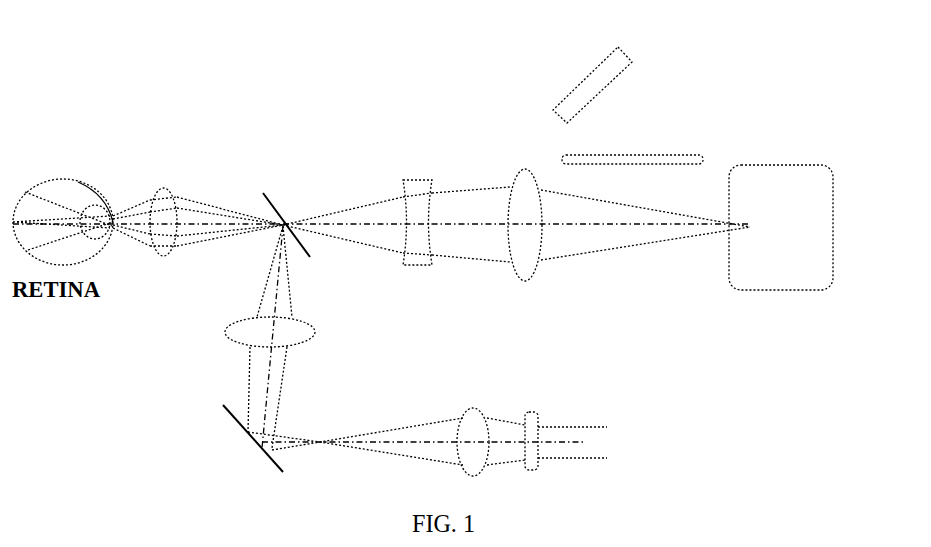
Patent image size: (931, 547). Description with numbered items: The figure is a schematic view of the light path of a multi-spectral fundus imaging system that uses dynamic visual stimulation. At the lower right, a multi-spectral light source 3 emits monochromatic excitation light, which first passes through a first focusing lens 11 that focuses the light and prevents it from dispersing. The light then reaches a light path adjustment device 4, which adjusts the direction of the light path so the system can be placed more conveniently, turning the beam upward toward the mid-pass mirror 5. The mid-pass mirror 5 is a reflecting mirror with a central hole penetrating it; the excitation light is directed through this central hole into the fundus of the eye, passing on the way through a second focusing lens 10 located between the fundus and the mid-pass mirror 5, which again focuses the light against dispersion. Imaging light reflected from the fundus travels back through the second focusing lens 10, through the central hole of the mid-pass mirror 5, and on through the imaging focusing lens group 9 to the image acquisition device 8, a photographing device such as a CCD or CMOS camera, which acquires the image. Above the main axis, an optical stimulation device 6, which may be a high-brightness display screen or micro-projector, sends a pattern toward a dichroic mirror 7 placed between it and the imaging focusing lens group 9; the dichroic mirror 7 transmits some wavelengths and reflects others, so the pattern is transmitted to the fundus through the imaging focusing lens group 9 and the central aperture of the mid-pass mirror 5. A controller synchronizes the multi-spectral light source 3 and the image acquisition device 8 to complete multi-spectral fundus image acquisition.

The multi-spectral light source 3 is at (540, 412).
The light path adjustment device 4 is at (260, 450).
The mid-pass mirror 5 is at (278, 202).
The optical stimulation device 6 is at (575, 72).
The dichroic mirror 7 is at (687, 148).
The image acquisition device 8 is at (840, 270).
The imaging focusing lens group 9 is at (518, 172).
The second focusing lens 10 is at (170, 182).
The first focusing lens 11 is at (478, 402).